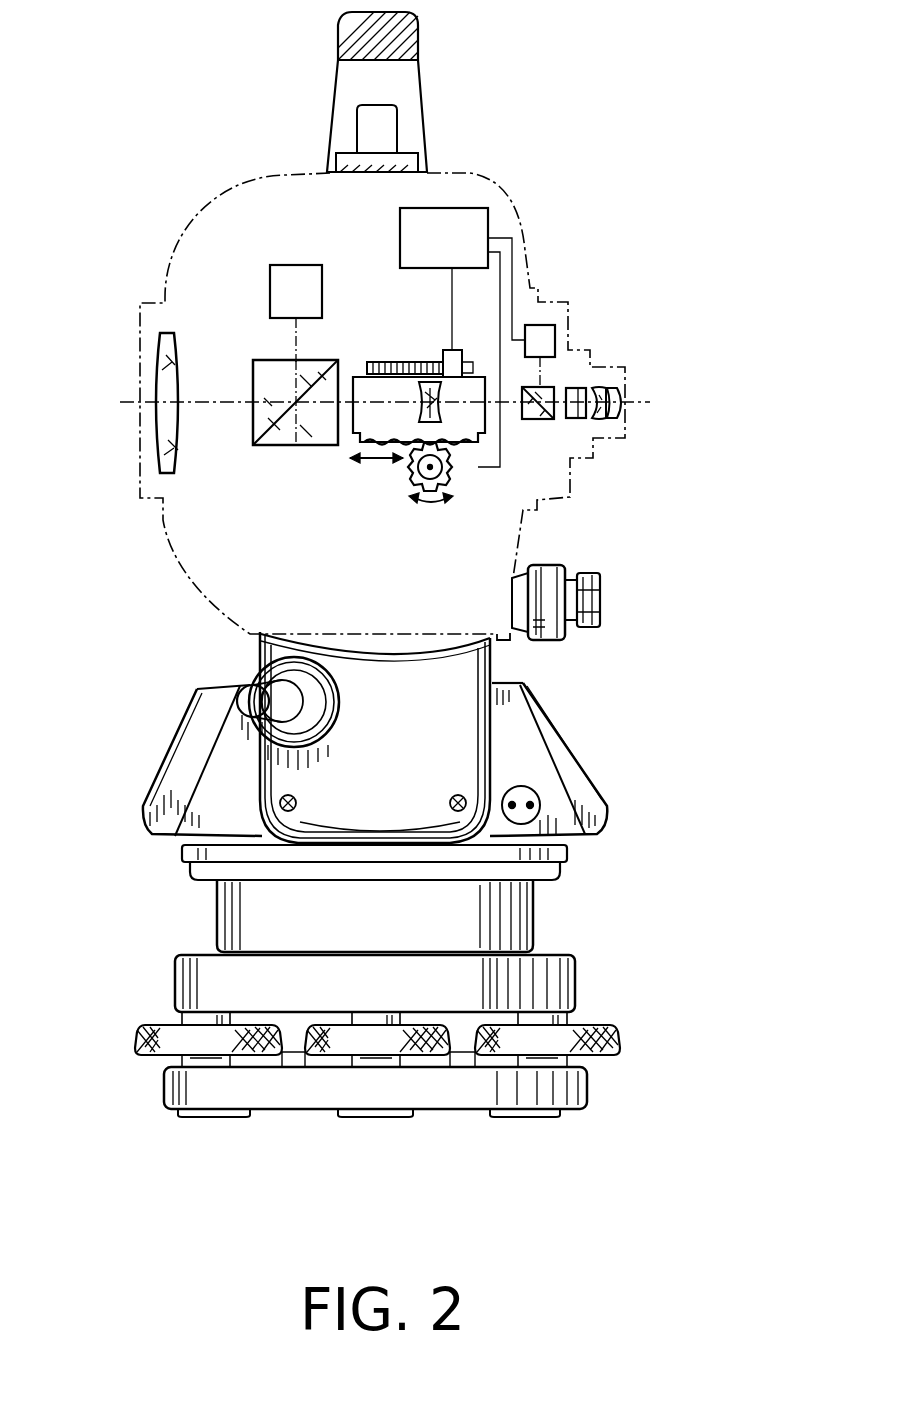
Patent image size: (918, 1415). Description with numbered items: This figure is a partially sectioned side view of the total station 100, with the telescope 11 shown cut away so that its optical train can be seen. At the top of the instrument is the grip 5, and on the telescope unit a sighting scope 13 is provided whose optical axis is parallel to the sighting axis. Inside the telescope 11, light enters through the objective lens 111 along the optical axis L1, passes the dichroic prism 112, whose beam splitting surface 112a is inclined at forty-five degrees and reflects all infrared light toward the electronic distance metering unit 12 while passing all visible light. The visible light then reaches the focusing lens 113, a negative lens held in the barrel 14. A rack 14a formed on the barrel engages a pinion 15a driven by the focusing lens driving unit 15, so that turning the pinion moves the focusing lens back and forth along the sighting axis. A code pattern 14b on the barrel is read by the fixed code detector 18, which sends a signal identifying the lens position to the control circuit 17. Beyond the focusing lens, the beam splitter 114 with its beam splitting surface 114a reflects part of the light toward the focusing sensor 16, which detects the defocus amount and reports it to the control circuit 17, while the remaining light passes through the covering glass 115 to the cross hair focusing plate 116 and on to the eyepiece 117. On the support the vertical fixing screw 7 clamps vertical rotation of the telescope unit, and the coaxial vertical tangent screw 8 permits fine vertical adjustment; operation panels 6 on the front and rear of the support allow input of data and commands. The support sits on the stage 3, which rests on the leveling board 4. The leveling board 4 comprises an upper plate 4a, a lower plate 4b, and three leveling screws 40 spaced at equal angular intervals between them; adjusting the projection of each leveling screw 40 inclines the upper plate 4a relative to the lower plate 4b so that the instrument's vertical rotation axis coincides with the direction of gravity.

The total station 100 is at (683, 122).
The telescope 11 is at (252, 516).
The grip 5 is at (348, 33).
The sighting scope 13 is at (408, 152).
The electronic distance metering unit 12 is at (270, 278).
The control circuit 17 is at (400, 230).
The code detector 18 is at (447, 350).
The focusing sensor 16 is at (541, 323).
The objective lens 111 is at (158, 366).
The dichroic prism 112 is at (253, 383).
The beam splitting surface 112a is at (267, 425).
The optical axis L1 is at (245, 403).
The barrel 14 is at (480, 378).
The focusing lens 113 is at (418, 390).
The code pattern 14b is at (370, 363).
The rack 14a is at (463, 447).
The focusing lens driving unit 15 is at (410, 488).
The pinion 15a is at (410, 467).
The beam splitter 114 is at (533, 420).
The beam splitting surface 114a is at (543, 383).
The covering glass 115 is at (577, 421).
The cross hair focusing plate 116 is at (600, 384).
The eyepiece 117 is at (603, 418).
The vertical fixing screw 7 is at (588, 598).
The vertical tangent screw 8 is at (553, 639).
The operation panel 6 is at (167, 758).
The stage 3 is at (517, 920).
The leveling board 4 is at (347, 1053).
The upper plate 4a is at (183, 983).
The lower plate 4b is at (348, 1092).
The leveling screw 40 is at (592, 1029).